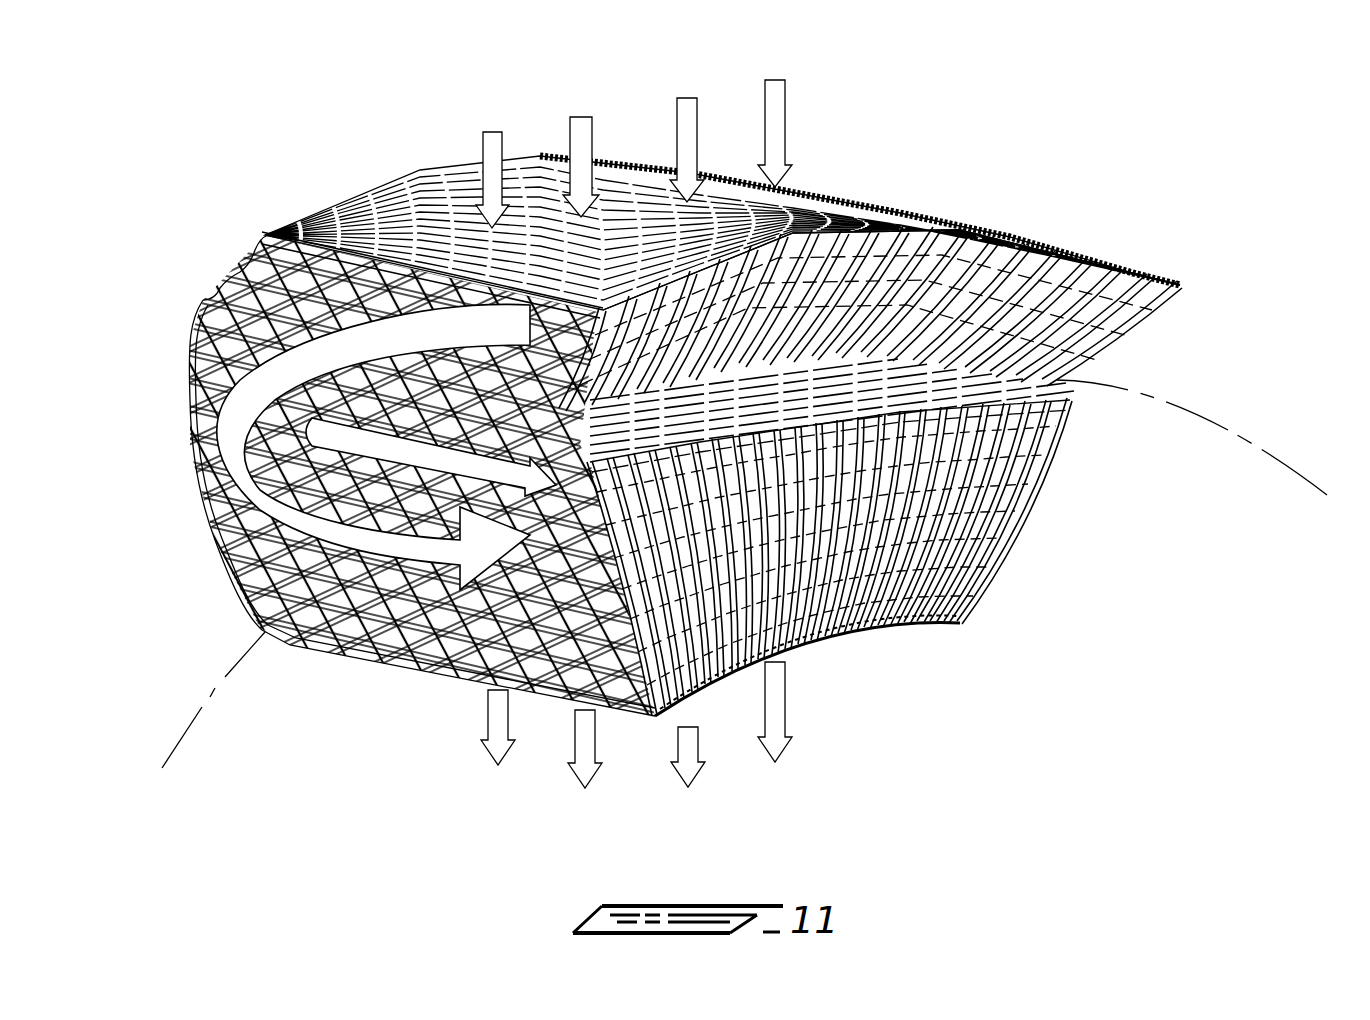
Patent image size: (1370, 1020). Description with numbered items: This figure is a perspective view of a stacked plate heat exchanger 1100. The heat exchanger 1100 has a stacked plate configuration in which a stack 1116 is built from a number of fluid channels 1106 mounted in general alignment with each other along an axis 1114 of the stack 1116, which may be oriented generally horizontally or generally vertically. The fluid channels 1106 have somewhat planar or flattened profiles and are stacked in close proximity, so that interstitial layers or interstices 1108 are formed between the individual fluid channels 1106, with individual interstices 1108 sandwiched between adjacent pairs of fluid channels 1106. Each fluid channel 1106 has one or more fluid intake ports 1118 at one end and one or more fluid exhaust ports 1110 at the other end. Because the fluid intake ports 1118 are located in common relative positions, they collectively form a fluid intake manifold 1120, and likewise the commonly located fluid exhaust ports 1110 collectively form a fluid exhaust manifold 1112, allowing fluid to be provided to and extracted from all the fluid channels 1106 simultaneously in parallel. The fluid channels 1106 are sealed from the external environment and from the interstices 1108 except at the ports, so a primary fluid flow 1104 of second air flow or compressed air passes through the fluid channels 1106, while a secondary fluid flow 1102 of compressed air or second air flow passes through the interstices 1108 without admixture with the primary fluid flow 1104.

The stacked plate heat exchanger 1100 is at (1056, 97).
The secondary fluid flow 1102 is at (818, 68).
The primary fluid flow 1104 is at (258, 490).
The fluid channel 1106 is at (207, 357).
The interstice 1108 is at (282, 227).
The fluid exhaust port 1110 is at (933, 622).
The fluid exhaust manifold 1112 is at (1098, 412).
The axis of the stack 1114 is at (1288, 472).
The stack 1116 is at (953, 227).
The fluid intake port 1118 is at (1108, 305).
The fluid intake manifold 1120 is at (1205, 278).